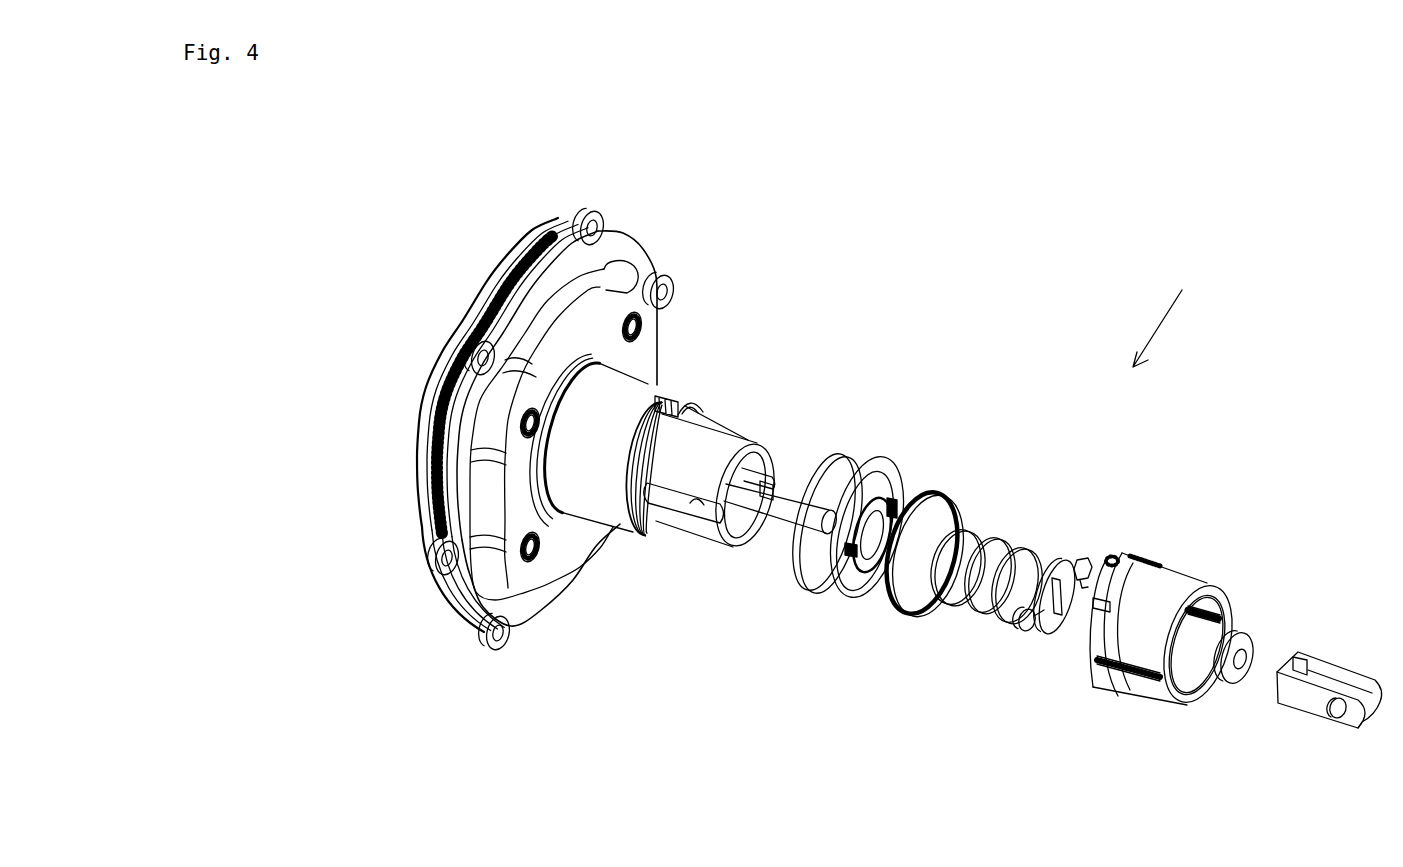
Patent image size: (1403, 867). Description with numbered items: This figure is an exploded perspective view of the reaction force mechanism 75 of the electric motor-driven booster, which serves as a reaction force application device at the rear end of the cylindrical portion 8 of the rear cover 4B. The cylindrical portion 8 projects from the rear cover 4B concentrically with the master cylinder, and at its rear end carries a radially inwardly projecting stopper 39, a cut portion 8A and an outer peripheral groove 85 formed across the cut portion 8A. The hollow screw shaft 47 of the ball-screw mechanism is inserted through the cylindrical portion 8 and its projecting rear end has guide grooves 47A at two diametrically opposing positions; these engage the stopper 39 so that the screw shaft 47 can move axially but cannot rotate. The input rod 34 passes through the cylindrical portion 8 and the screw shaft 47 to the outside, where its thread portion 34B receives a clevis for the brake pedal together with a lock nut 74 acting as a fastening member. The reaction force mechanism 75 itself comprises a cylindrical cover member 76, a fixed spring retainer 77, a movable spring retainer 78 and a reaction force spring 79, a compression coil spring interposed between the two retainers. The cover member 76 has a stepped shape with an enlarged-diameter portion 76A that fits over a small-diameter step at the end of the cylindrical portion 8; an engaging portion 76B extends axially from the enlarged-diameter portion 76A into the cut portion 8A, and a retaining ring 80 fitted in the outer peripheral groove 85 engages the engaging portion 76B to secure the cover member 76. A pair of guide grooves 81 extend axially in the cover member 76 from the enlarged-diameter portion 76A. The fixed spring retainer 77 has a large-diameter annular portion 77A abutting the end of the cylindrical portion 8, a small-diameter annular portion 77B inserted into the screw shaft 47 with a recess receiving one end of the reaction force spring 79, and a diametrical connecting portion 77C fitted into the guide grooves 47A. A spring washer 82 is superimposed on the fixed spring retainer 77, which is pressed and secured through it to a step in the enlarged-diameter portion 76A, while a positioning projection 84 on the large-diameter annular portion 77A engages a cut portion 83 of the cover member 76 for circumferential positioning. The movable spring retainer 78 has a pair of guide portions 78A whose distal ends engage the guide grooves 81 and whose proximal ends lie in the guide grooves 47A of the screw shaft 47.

The rear cover 4B is at (613, 213).
The cylindrical portion 8 is at (657, 383).
The cut portion 8A is at (683, 396).
The outer peripheral groove 85 is at (620, 520).
The stopper 39 is at (657, 530).
The screw shaft 47 is at (723, 433).
The guide grooves 47A is at (792, 477).
The input rod 34 is at (752, 525).
The thread portion 34B is at (793, 472).
The positioning projection 84 is at (845, 470).
The retaining ring 80 is at (820, 603).
The fixed spring retainer 77 is at (888, 472).
The large-diameter annular portion 77A is at (860, 603).
The small-diameter annular portion 77B is at (908, 482).
The connecting portion 77C is at (840, 597).
The spring washer 82 is at (937, 497).
The reaction force spring 79 is at (967, 597).
The movable spring retainer 78 is at (1057, 622).
The guide portions 78A is at (1092, 543).
The cut portion 83 is at (1095, 612).
The cover member 76 is at (1193, 578).
The enlarged-diameter portion 76A is at (1140, 548).
The engaging portion 76B is at (1113, 556).
The guide grooves 81 is at (1137, 687).
The reaction force mechanism 75 is at (1166, 312).
The lock nut 74 is at (1228, 688).